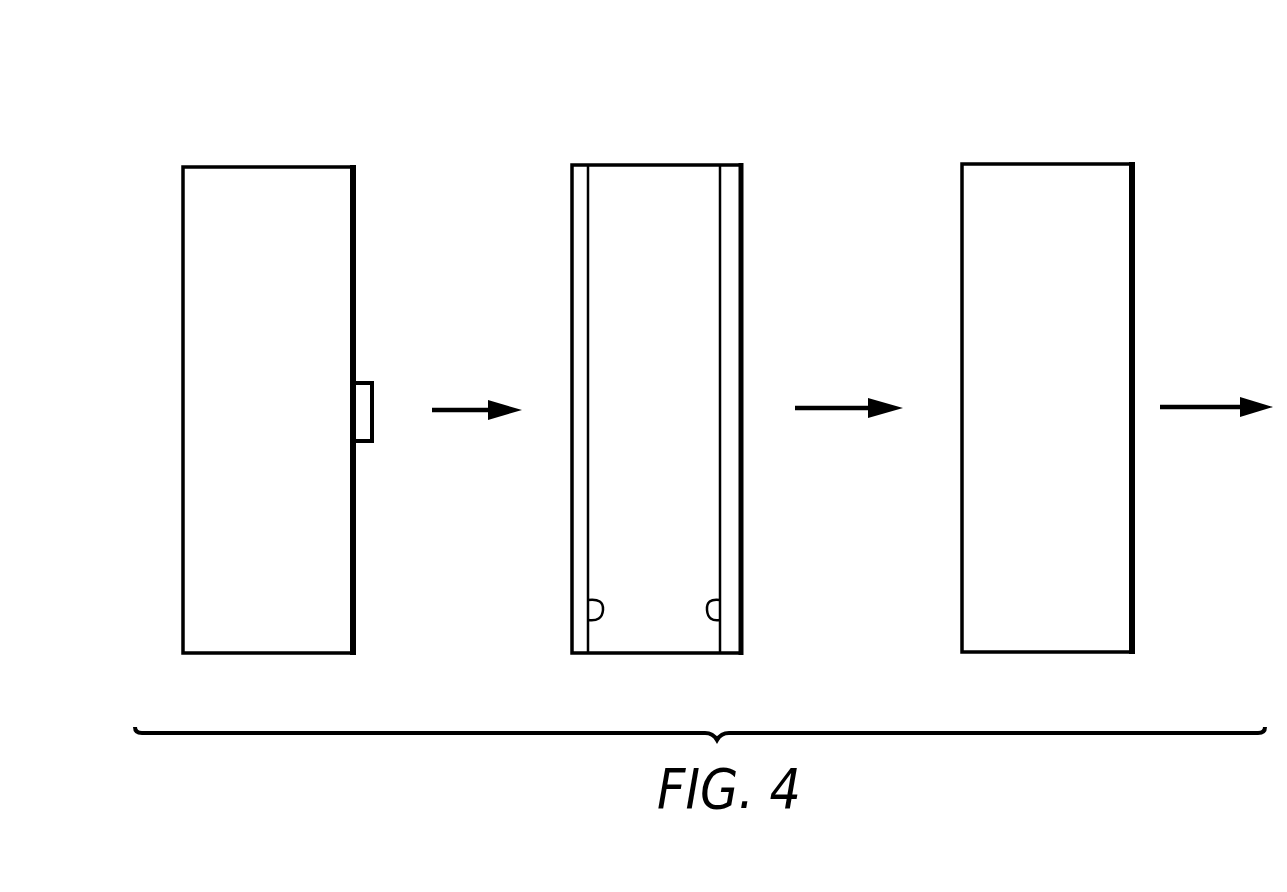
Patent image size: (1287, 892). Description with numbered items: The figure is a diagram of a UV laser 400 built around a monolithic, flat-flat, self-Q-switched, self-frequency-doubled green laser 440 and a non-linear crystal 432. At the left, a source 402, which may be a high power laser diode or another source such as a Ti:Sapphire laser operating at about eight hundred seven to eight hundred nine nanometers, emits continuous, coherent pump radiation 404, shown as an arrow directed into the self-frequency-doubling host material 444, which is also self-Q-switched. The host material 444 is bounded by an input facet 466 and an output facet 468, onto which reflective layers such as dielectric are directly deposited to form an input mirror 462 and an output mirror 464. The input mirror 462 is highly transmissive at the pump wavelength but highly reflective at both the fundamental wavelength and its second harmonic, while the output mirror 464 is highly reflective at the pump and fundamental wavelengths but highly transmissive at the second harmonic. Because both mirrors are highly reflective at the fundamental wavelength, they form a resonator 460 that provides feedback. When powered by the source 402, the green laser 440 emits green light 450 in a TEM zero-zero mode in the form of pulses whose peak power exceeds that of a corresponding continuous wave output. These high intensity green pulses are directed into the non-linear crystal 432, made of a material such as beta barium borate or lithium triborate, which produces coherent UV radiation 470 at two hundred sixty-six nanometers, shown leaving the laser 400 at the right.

The UV laser 400 is at (971, 46).
The source 402 is at (311, 655).
The pump radiation 404 is at (470, 410).
The non-linear crystal 432 is at (997, 164).
The green laser 440 is at (737, 72).
The self-frequency-doubling host material 444 is at (662, 165).
The green light 450 is at (849, 408).
The resonator 460 is at (752, 126).
The input mirror 462 is at (588, 625).
The output mirror 464 is at (722, 622).
The input facet 466 is at (590, 568).
The output facet 468 is at (722, 561).
The UV radiation 470 is at (1211, 407).